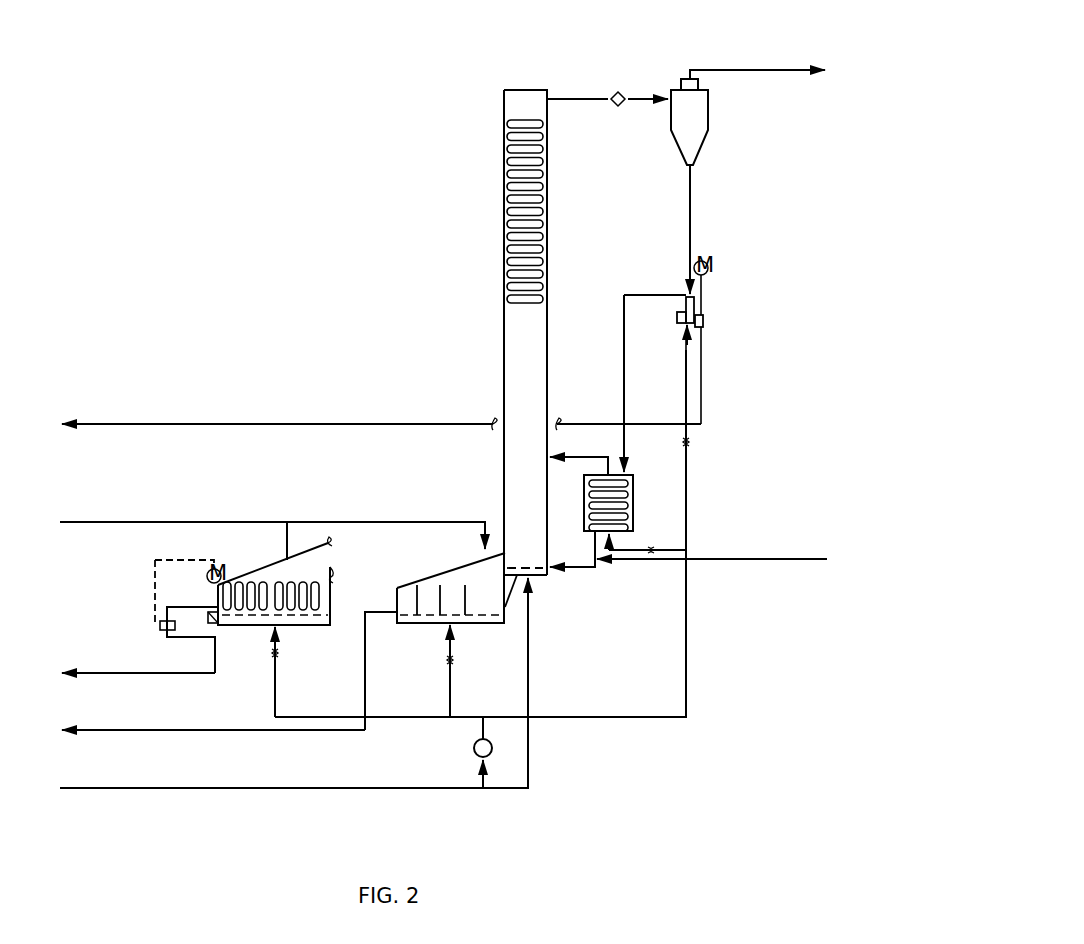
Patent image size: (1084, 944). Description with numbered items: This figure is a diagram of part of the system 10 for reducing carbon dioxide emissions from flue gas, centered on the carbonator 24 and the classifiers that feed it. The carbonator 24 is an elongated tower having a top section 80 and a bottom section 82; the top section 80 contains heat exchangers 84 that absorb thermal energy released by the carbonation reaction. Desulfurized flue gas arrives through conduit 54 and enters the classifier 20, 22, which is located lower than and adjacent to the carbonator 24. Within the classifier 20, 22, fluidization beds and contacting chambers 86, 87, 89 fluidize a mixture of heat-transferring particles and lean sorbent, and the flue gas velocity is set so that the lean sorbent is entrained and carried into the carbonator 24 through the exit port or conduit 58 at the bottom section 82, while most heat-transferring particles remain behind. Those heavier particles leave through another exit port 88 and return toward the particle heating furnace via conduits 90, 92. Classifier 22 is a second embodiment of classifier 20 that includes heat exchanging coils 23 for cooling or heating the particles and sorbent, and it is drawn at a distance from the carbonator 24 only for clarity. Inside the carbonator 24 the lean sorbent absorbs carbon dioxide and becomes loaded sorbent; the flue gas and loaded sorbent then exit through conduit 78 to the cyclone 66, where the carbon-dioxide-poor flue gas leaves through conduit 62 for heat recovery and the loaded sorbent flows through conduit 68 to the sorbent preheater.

The system 10 is at (130, 292).
The classifier 20 is at (412, 626).
The classifier 22 is at (312, 627).
The heat exchanging coils 23 is at (252, 615).
The carbonator 24 is at (527, 90).
The conduit 54 is at (158, 787).
The exit port/conduit 58 is at (323, 548).
The conduit 62 is at (757, 70).
The cyclone 66 is at (710, 115).
The conduit 68 is at (278, 422).
The conduit 78 is at (577, 97).
The top section 80 is at (470, 208).
The bottom section 82 is at (478, 390).
The heat exchangers 84 is at (523, 310).
The fluidization beds and/or contacting chambers 86 is at (268, 582).
The fluidization beds and/or contacting chambers 87 is at (422, 588).
The exit port 88 is at (210, 605).
The fluidization beds and/or contacting chambers 89 is at (457, 593).
The conduit 90 is at (122, 729).
The conduit 92 is at (93, 672).